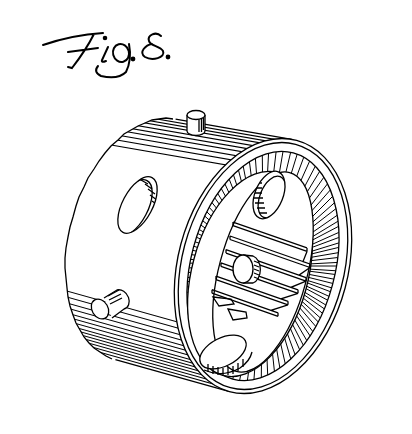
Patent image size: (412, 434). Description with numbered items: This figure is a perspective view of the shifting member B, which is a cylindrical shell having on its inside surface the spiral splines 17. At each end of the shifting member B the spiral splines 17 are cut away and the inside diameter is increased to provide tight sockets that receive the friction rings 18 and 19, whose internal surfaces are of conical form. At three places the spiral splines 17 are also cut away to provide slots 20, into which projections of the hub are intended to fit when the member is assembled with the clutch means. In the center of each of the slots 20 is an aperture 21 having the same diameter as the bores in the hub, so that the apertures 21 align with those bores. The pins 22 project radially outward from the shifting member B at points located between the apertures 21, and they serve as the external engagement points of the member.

The shifting member B is at (238, 134).
The spiral splines 17 is at (298, 262).
The friction ring 18 is at (318, 197).
The friction ring 19 is at (237, 207).
The slots 20 is at (313, 213).
The apertures 21 is at (118, 224).
The pins 22 is at (207, 108).